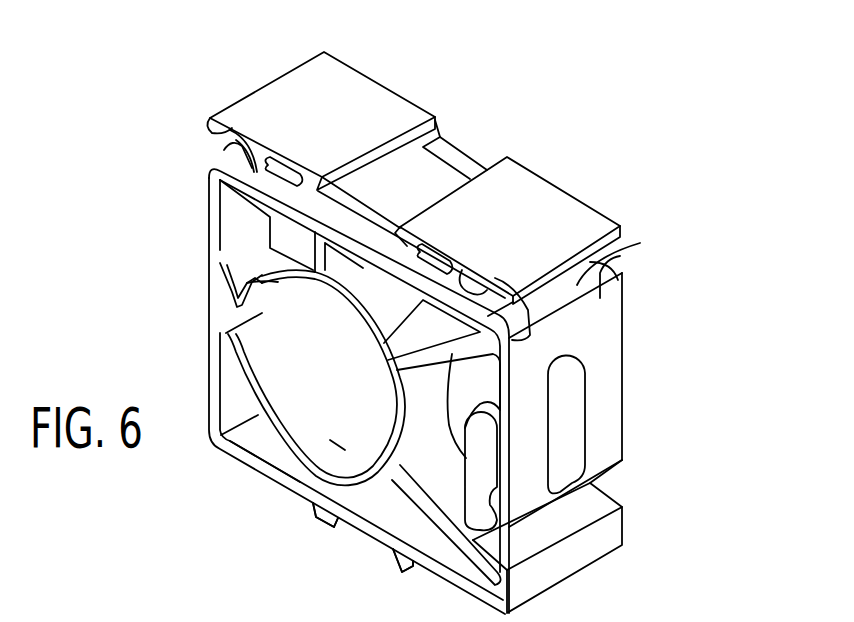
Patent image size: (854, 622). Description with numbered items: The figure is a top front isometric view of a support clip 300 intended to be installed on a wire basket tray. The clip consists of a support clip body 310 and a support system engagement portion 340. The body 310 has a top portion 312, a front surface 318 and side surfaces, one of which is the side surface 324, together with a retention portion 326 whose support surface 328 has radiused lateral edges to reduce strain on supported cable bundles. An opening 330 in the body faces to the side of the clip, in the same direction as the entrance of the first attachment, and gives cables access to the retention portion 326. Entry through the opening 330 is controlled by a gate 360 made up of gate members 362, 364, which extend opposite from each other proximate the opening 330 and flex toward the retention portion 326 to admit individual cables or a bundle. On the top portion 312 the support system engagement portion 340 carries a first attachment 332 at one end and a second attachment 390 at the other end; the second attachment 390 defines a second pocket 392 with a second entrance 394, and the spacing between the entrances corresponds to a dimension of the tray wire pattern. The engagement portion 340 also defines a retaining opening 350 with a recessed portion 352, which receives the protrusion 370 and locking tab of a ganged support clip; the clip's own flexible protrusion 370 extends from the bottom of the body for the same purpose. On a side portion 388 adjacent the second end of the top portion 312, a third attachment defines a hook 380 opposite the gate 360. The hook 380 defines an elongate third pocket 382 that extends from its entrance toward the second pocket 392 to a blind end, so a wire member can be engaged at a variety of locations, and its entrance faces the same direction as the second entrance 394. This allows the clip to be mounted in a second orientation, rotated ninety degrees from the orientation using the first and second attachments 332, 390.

The support clip 300 is at (613, 57).
The support clip body 310 is at (187, 387).
The top portion 312 is at (220, 163).
The front surface 318 is at (213, 217).
The side surface 324 is at (603, 450).
The retention portion 326 is at (277, 433).
The support surface 328 is at (338, 438).
The opening 330 is at (203, 317).
The first attachment 332 is at (284, 44).
The support system engagement portion 340 is at (227, 74).
The retaining opening 350 is at (452, 146).
The recessed portion 352 is at (468, 152).
The gate 360 is at (207, 285).
The gate member 362 is at (258, 312).
The gate member 364 is at (217, 267).
The protrusion 370 is at (367, 537).
The hook 380 is at (595, 343).
The third pocket 382 is at (483, 457).
The side portion 388 is at (615, 380).
The second attachment 390 is at (618, 212).
The second pocket 392 is at (586, 260).
The second entrance 394 is at (577, 283).